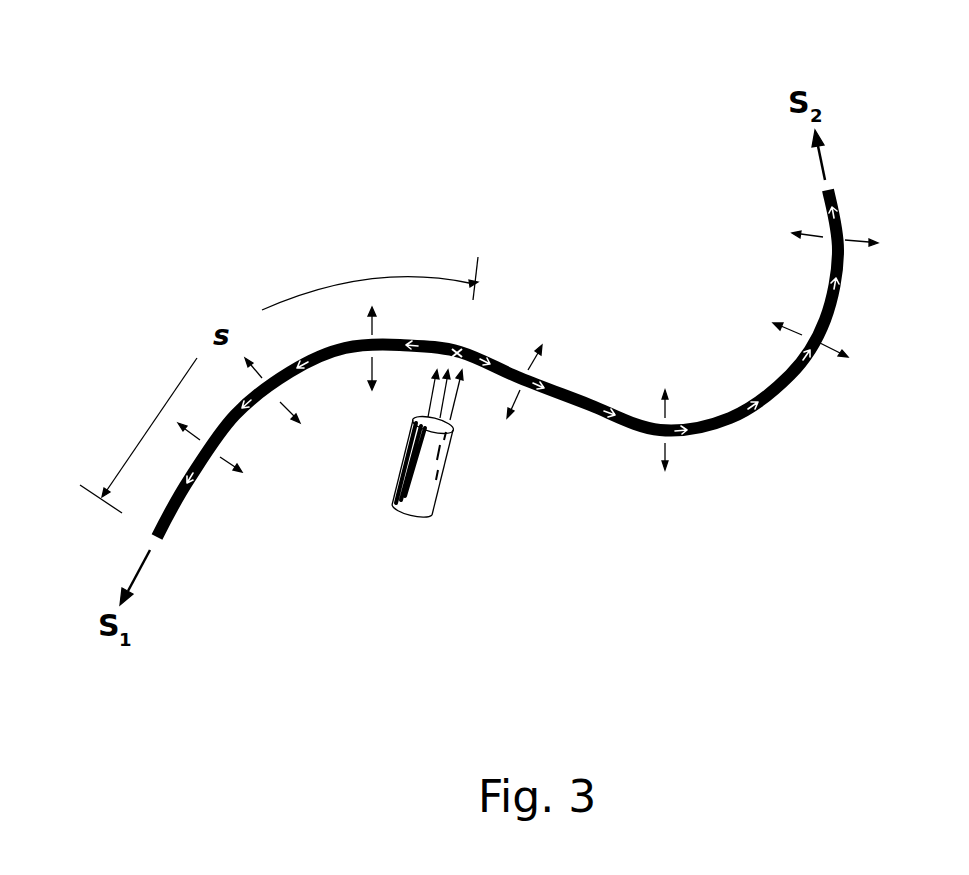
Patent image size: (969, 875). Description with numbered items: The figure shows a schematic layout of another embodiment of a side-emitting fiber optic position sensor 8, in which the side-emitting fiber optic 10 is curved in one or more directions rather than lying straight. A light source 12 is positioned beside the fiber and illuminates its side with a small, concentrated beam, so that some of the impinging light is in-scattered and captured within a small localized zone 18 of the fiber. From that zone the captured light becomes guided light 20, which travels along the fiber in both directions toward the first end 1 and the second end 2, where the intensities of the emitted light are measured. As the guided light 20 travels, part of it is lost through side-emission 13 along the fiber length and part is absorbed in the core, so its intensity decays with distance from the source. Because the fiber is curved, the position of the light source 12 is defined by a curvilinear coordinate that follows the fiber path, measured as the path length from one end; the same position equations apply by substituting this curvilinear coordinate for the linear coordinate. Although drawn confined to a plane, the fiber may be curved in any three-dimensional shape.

The side-emitting fiber optic position sensor 8 is at (99, 101).
The side-emitting fiber optic 10 is at (758, 420).
The light source 12 is at (448, 505).
The side-emission 13 is at (669, 434).
The localized zone 18 is at (468, 340).
The guided light 20 is at (567, 393).
The first end of fiber 1 is at (188, 552).
The second end of fiber 2 is at (863, 185).